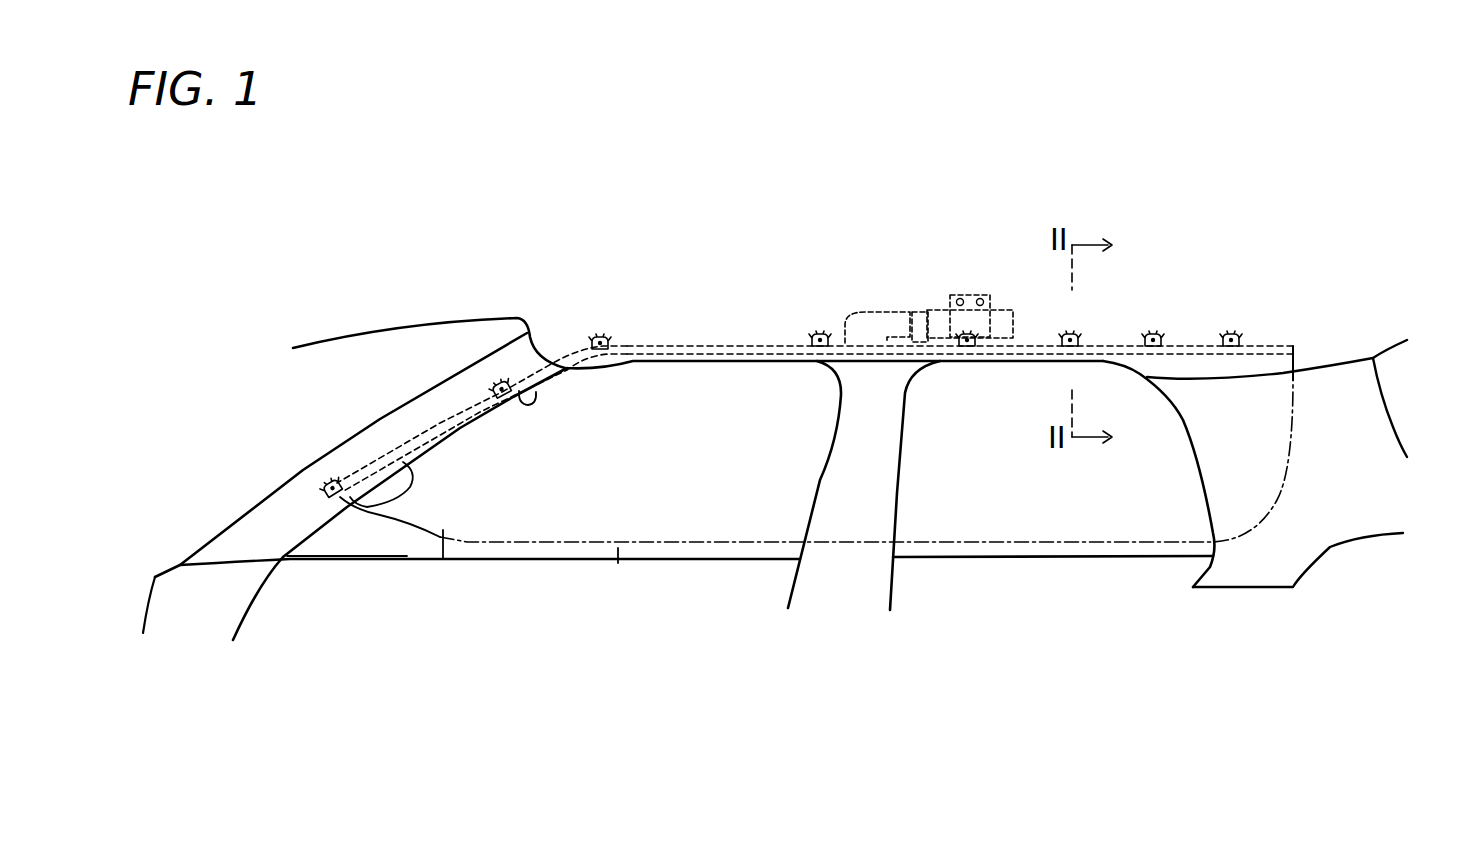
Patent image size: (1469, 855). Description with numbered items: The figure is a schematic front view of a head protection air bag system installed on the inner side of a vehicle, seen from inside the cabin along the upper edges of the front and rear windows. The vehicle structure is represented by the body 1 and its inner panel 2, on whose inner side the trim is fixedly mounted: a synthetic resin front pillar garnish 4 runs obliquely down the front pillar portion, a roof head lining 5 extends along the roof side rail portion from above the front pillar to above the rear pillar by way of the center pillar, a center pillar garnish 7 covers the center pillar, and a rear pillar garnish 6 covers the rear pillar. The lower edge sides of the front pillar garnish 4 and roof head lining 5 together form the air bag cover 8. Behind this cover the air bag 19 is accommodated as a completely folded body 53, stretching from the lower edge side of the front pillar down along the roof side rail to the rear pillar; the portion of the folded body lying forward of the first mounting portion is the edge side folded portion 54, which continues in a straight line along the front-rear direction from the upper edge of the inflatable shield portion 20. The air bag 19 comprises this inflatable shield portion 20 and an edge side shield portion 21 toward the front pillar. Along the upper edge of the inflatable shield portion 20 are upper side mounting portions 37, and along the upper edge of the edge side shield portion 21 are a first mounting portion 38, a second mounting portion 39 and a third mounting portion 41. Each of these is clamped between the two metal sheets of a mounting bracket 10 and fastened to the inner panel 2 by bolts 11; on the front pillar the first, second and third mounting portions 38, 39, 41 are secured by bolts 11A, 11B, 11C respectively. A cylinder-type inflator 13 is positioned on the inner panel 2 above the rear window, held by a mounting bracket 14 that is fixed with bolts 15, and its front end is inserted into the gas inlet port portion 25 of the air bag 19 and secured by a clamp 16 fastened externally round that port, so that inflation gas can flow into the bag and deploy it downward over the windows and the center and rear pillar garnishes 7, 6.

The body 1 is at (815, 419).
The inner panel 2 is at (493, 350).
The front pillar garnish 4 is at (280, 532).
The roof head lining 5 is at (748, 338).
The rear pillar garnish 6 is at (1380, 443).
The center pillar garnish 7 is at (880, 488).
The air bag cover 8 is at (503, 405).
The mounting brackets 10 is at (607, 340).
The bolts 11 is at (1073, 337).
The bolt 11A is at (597, 343).
The bolt 11B is at (500, 398).
The bolt 11C is at (341, 478).
The inflator 13 is at (1005, 285).
The mounting bracket 14 is at (945, 310).
The bolts 15 is at (986, 298).
The clamp 16 is at (914, 310).
The air bag 19 is at (483, 645).
The inflatable shield portion 20 is at (690, 528).
The edge side shield portion 21 is at (440, 560).
The gas inlet port portion 25 is at (866, 310).
The upper side mounting portions 37 is at (817, 363).
The first mounting portion 38 is at (598, 363).
The second mounting portion 39 is at (460, 365).
The third mounting portion 41 is at (330, 478).
The completely folded body 53 is at (866, 461).
The edge side folded portion 54 is at (561, 348).